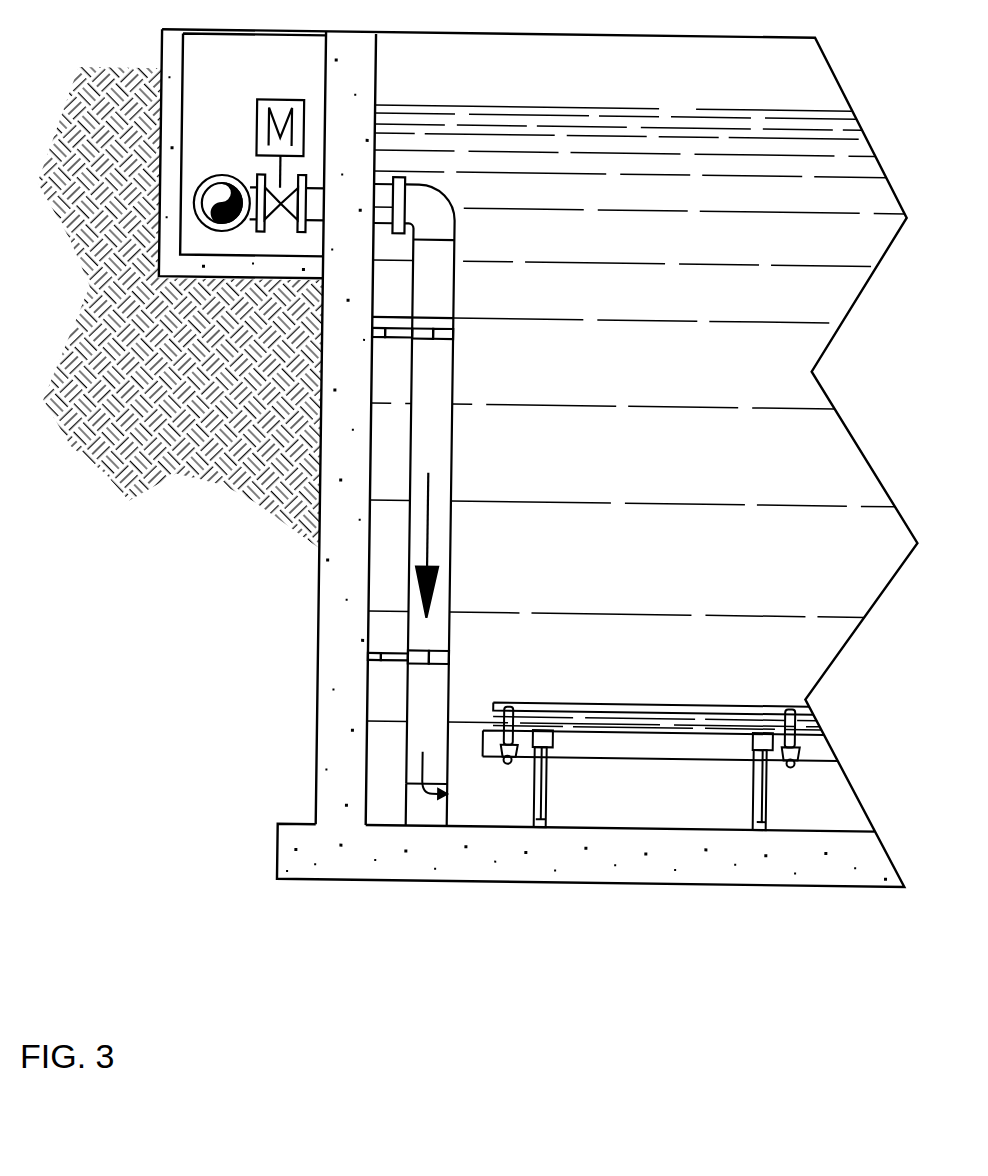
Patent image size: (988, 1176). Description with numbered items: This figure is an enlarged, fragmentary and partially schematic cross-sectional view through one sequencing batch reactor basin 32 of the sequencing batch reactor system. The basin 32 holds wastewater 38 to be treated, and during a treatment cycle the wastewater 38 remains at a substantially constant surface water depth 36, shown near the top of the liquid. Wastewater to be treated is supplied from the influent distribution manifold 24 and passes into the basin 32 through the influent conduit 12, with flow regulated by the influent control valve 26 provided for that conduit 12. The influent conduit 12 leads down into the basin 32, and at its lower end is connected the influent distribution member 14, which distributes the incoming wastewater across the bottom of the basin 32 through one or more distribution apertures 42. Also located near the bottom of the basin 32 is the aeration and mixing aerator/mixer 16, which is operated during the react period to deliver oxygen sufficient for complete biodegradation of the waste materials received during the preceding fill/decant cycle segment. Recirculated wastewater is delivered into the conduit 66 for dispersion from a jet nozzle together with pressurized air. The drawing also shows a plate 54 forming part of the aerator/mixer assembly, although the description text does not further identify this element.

The influent conduit 12 is at (434, 420).
The influent distribution member 14 is at (428, 784).
The aeration and mixing aerator/mixer 16 is at (626, 740).
The influent distribution manifold 24 is at (208, 190).
The control valve 26 is at (285, 205).
The sequencing batch reactor basin 32 is at (494, 82).
The surface water depth 36 is at (630, 138).
The wastewater 38 is at (664, 446).
The distribution aperture 42 is at (452, 812).
The plate 54 is at (607, 710).
The conduit 66 is at (586, 746).